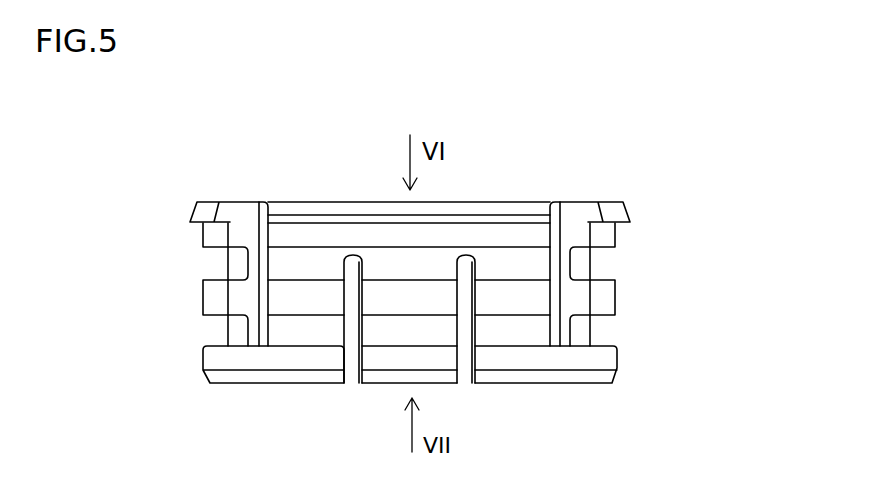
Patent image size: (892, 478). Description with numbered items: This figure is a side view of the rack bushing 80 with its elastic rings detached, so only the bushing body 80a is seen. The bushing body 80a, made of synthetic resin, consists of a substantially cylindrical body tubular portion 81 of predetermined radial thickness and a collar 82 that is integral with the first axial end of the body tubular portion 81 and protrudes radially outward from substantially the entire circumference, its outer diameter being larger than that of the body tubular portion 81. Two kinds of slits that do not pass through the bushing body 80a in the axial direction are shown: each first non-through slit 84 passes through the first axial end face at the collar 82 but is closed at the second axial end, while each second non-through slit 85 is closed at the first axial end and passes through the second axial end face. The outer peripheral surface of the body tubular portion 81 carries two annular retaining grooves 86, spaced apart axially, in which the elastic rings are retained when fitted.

The rack bushing 80 is at (442, 299).
The bushing body 80a is at (646, 288).
The body tubular portion 81 is at (270, 365).
The collar 82 is at (191, 211).
The first non-through slit 84 is at (250, 205).
The second non-through slit 85 is at (347, 368).
The retaining groove 86 is at (208, 347).